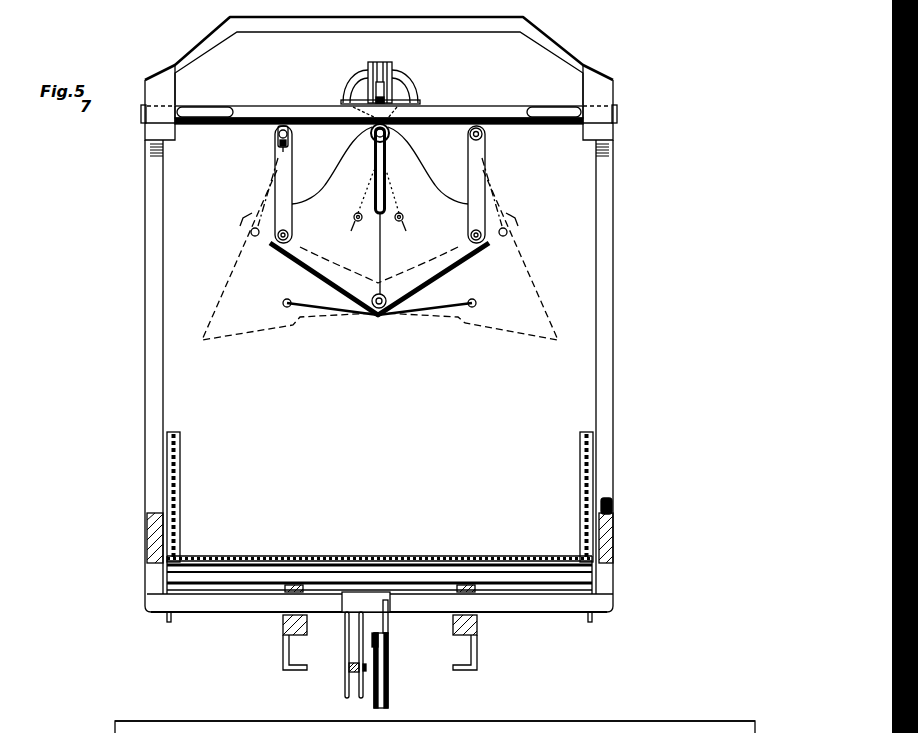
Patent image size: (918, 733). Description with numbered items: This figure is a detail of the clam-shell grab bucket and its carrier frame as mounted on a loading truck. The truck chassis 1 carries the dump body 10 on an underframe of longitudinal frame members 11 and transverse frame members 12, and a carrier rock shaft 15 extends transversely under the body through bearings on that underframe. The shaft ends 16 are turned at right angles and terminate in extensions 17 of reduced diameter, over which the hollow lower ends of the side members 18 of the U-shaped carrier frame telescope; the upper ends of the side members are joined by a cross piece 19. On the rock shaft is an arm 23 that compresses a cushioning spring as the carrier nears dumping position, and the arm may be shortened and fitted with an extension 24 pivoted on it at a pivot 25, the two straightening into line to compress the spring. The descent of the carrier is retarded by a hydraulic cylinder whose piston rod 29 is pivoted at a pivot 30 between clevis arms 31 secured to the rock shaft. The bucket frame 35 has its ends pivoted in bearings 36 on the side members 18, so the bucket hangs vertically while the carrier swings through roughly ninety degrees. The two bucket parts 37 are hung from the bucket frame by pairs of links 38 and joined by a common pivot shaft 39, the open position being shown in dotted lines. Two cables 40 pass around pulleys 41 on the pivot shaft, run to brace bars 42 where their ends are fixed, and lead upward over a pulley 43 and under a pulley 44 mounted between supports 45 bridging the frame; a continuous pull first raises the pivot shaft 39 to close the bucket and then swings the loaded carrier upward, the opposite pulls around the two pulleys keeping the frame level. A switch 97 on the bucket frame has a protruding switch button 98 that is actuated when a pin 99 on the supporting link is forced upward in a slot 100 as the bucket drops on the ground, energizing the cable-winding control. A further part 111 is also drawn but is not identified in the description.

The chassis 1 is at (285, 645).
The dump body 10 is at (181, 501).
The longitudinal frame members 11 is at (283, 618).
The transverse frame members 12 is at (428, 573).
The carrier rock shaft 15 is at (210, 604).
The shaft ends 16 is at (157, 597).
The extensions 17 is at (157, 572).
The side members 18 is at (156, 410).
The cross piece 19 is at (568, 63).
The arm 23 is at (388, 630).
The extension 24 is at (392, 690).
The pivot 25 is at (389, 650).
The piston rod 29 is at (354, 670).
The pivot 30 is at (349, 667).
The clevis arms 31 is at (360, 645).
The bucket frame 35 is at (484, 117).
The bearings 36 is at (160, 127).
The bucket parts 37 is at (327, 188).
The links 38 is at (273, 190).
The common pivot shaft 39 is at (378, 314).
The cables 40 is at (343, 101).
The pulleys 41 is at (373, 147).
The brace bars 42 is at (353, 225).
The pulley 43 is at (393, 63).
The pulley 44 is at (404, 77).
The supports 45 is at (358, 84).
The switch 97 is at (277, 130).
The switch button 98 is at (278, 136).
The pin 99 is at (283, 150).
The slot 100 is at (280, 142).
The housing box 111 is at (655, 721).